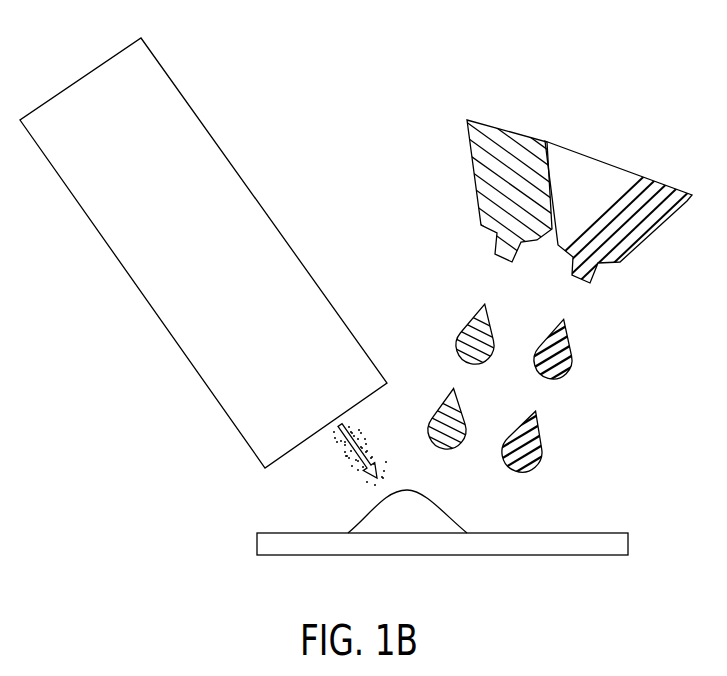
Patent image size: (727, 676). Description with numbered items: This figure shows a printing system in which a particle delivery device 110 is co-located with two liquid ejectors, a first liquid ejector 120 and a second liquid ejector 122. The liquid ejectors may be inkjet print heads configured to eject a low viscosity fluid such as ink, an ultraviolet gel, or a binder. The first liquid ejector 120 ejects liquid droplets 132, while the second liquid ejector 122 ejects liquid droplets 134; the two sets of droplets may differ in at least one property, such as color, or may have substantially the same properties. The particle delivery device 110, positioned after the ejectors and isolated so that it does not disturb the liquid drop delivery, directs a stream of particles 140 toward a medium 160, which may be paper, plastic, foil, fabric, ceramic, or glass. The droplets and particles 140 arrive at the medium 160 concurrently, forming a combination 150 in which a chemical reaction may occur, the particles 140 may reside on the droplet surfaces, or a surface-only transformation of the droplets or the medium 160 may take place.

The particle delivery device 110 is at (208, 152).
The first liquid ejector 120 is at (502, 138).
The second liquid ejector 122 is at (627, 177).
The liquid droplets 132 is at (462, 322).
The liquid droplets 134 is at (572, 340).
The particles 140 is at (348, 459).
The combination 150 is at (450, 530).
The medium 160 is at (613, 538).